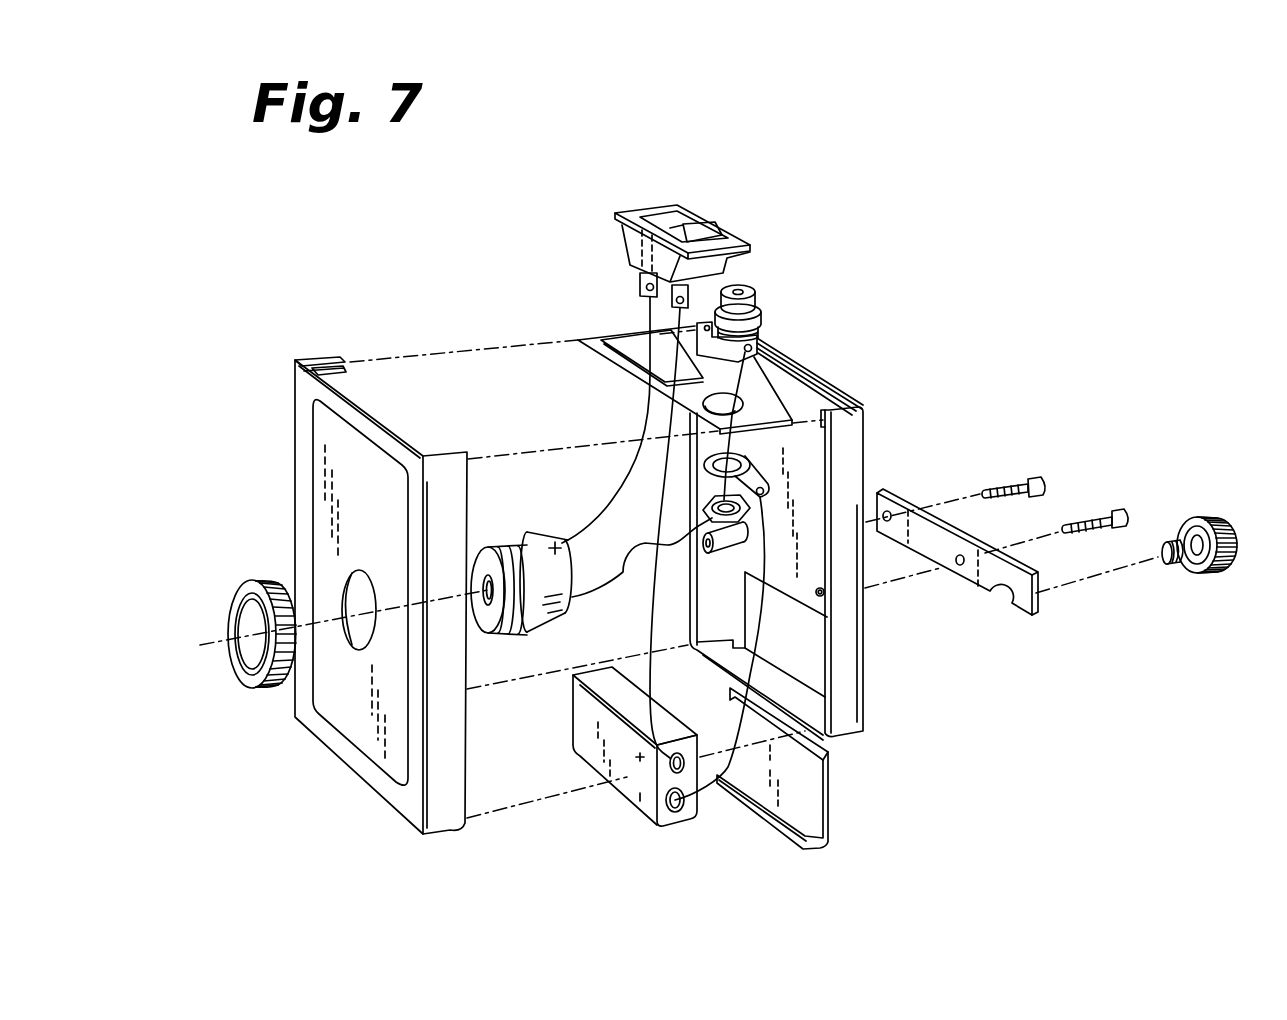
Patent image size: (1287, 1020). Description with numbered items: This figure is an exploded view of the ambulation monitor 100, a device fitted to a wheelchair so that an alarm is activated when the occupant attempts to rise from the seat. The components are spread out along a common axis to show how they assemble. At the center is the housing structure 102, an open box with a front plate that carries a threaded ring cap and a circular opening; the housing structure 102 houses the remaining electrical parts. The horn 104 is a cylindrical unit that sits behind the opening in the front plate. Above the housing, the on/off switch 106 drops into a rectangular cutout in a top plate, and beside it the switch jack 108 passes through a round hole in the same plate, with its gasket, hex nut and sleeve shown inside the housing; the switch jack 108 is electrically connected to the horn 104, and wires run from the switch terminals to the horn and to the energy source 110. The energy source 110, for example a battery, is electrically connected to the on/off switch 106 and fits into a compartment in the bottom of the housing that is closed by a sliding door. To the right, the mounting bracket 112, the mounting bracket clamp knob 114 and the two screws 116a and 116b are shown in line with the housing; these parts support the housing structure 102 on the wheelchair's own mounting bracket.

The ambulation monitor 100 is at (990, 326).
The housing structure 102 is at (316, 356).
The horn 104 is at (552, 518).
The on/off switch 106 is at (648, 212).
The switch jack 108 is at (757, 290).
The energy source 110 is at (627, 789).
The mounting bracket 112 is at (1040, 620).
The mounting bracket clamp knob 114 is at (1208, 515).
The screw 116a is at (1021, 473).
The screw 116b is at (1106, 505).